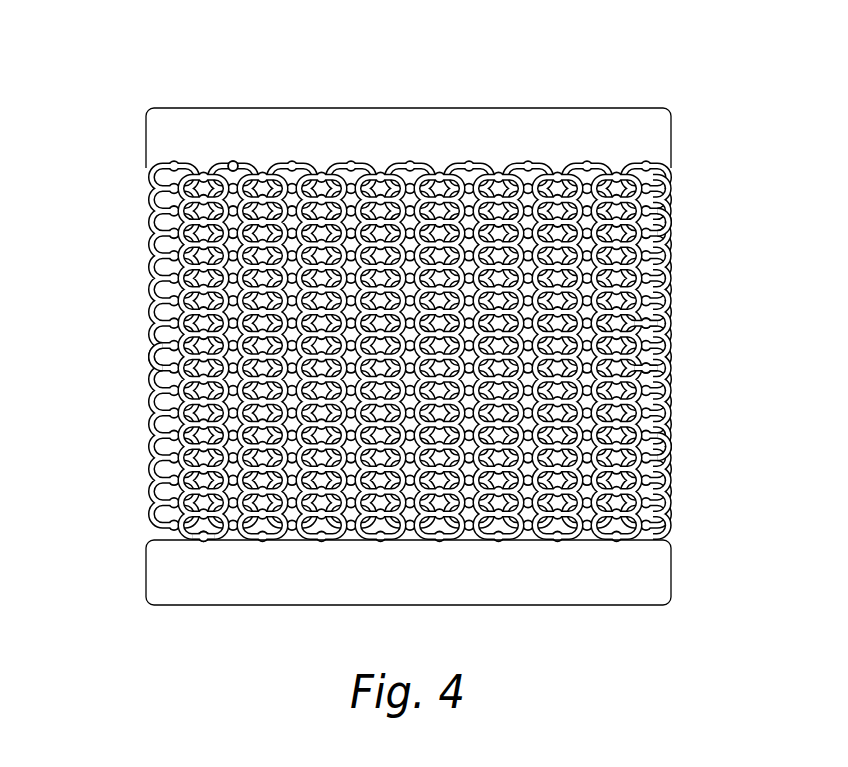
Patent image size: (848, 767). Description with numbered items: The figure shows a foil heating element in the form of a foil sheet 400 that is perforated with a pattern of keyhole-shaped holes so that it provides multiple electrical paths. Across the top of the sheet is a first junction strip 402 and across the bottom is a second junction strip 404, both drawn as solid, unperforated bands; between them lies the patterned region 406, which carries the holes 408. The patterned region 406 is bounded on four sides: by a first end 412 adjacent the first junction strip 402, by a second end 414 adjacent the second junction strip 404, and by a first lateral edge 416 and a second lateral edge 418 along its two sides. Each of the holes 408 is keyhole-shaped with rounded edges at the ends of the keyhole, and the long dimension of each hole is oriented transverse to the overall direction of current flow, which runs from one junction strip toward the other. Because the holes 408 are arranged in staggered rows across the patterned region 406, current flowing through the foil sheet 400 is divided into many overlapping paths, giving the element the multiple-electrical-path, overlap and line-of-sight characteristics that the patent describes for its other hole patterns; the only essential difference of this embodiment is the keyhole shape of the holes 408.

The foil sheet 400 is at (48, 46).
The first junction strip 402 is at (641, 138).
The second junction strip 404 is at (650, 583).
The patterned region 406 is at (674, 231).
The holes 408 is at (650, 367).
The first end 412 is at (226, 158).
The second end 414 is at (197, 544).
The first lateral edge 416 is at (146, 367).
The second lateral edge 418 is at (674, 452).